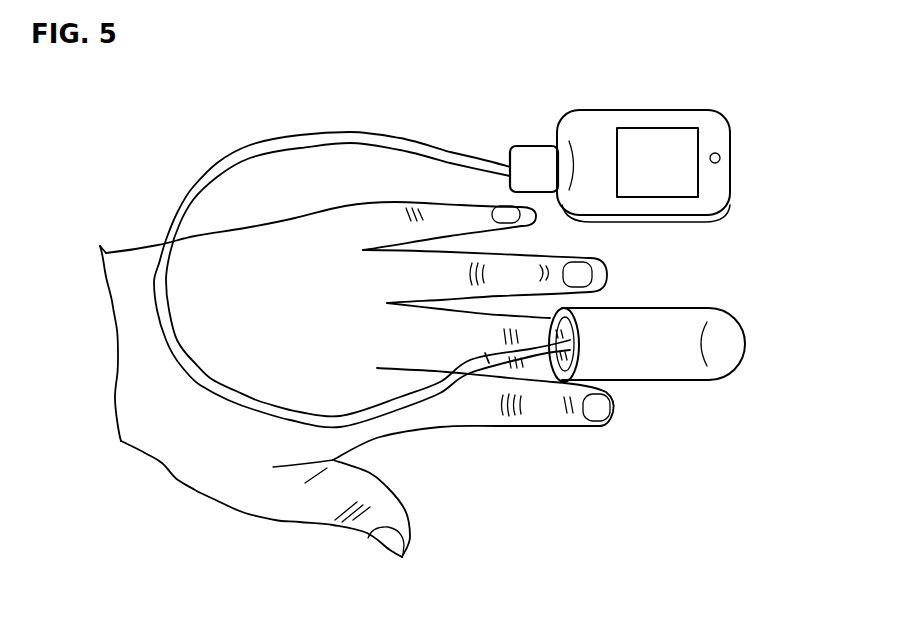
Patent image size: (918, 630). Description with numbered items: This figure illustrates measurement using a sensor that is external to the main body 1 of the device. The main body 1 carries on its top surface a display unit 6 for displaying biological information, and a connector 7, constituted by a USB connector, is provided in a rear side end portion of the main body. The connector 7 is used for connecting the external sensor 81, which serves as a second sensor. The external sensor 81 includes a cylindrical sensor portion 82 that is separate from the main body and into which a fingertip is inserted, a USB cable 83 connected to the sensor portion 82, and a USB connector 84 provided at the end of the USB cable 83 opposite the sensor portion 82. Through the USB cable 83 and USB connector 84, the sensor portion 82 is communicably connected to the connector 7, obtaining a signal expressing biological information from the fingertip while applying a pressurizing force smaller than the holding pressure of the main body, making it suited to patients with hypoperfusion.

The main body 1 is at (643, 165).
The display unit 6 is at (665, 198).
The connector 7 is at (553, 158).
The external sensor 81 is at (642, 392).
The sensor portion 82 is at (660, 382).
The USB cable 83 is at (192, 369).
The USB connector 84 is at (525, 146).